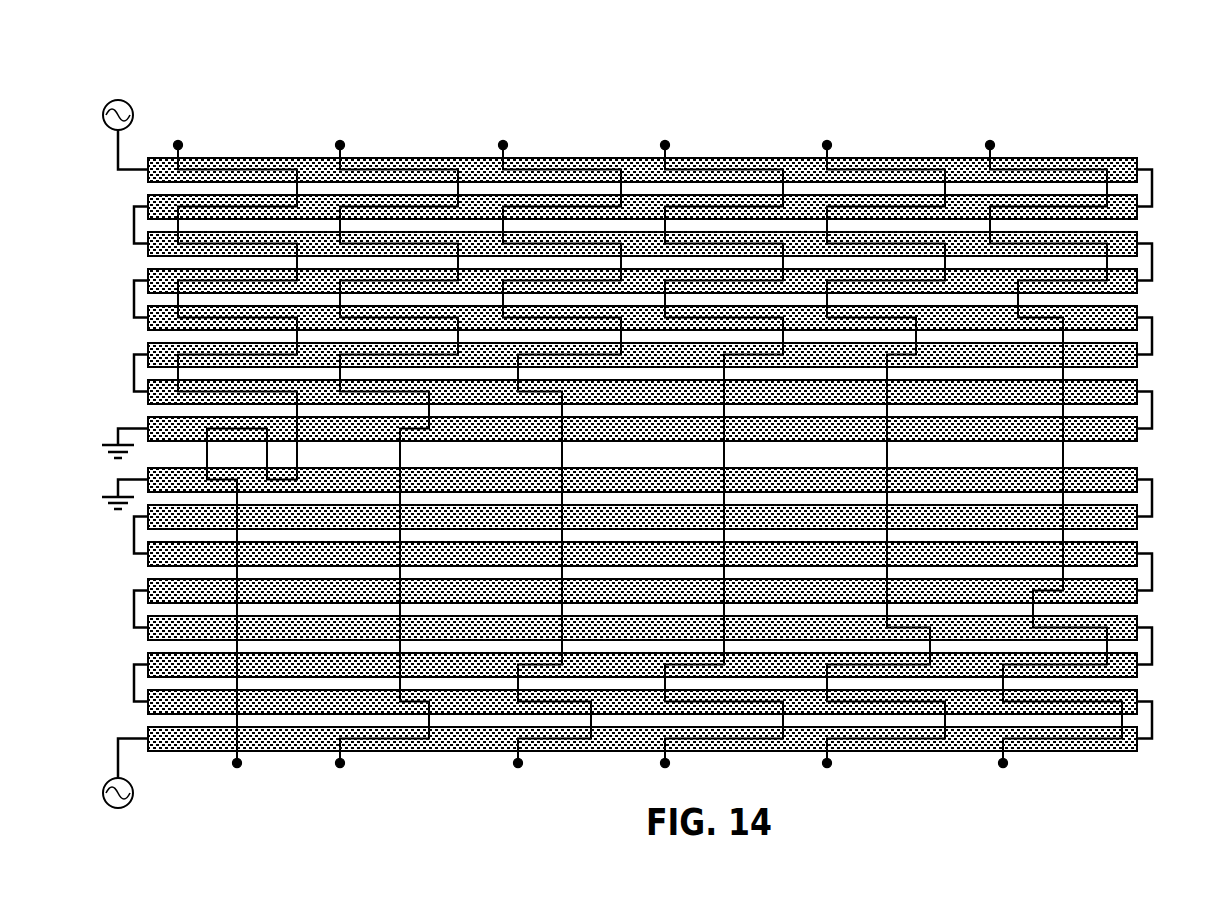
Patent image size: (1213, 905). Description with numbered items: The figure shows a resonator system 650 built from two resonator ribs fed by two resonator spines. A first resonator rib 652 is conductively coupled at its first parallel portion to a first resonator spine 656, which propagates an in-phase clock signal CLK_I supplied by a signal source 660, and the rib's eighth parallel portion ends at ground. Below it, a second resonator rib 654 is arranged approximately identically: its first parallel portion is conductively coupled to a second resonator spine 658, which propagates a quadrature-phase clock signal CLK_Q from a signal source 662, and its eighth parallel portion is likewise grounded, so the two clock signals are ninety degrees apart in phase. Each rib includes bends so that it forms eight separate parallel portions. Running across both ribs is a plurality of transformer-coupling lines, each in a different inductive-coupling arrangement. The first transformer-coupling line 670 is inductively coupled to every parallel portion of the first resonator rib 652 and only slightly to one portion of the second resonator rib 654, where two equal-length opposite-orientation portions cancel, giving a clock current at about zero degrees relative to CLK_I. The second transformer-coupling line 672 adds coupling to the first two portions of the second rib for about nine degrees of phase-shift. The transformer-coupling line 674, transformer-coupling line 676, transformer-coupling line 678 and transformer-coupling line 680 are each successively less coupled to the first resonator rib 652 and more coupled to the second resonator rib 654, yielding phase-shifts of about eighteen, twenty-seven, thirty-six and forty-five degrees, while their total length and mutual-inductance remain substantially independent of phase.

The resonator system 650 is at (207, 51).
The first resonator rib 652 is at (1123, 151).
The second resonator rib 654 is at (1123, 757).
The first resonator spine 656 is at (118, 145).
The second resonator spine 658 is at (118, 759).
The signal source 660 is at (113, 101).
The signal source 662 is at (122, 806).
The first transformer-coupling line 670 is at (252, 138).
The second transformer-coupling line 672 is at (398, 138).
The transformer-coupling line 674 is at (567, 138).
The transformer-coupling line 676 is at (715, 138).
The transformer-coupling line 678 is at (890, 138).
The transformer-coupling line 680 is at (1041, 138).